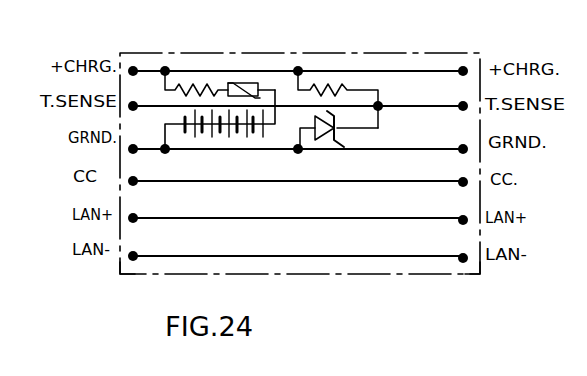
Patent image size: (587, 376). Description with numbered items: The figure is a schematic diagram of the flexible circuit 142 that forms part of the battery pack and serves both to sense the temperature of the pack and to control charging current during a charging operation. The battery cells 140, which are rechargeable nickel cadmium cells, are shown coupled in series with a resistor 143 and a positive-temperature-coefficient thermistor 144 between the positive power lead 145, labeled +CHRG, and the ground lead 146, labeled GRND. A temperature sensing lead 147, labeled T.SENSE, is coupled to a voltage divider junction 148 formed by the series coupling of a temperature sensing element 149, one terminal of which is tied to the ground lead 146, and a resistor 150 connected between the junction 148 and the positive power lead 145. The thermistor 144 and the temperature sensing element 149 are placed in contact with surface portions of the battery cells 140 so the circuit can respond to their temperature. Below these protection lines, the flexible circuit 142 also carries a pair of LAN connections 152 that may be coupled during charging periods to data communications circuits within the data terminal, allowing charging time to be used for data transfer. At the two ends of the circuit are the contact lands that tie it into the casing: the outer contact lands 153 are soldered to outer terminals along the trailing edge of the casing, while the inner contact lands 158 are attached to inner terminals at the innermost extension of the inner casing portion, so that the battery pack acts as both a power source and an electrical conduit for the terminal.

The battery cells 140 is at (212, 148).
The flexible circuit 142 is at (423, 53).
The resistor 143 is at (197, 85).
The positive-temperature-coefficient thermistor 144 is at (250, 83).
The positive power lead 145 is at (188, 70).
The ground lead 146 is at (372, 151).
The temperature sensing lead 147 is at (412, 108).
The voltage divider junction 148 is at (382, 105).
The temperature sensing element 149 is at (322, 140).
The resistor 150 is at (320, 82).
The LAN connections 152 is at (362, 218).
The outer contact lands 153 is at (462, 268).
The inner contact lands 158 is at (131, 274).